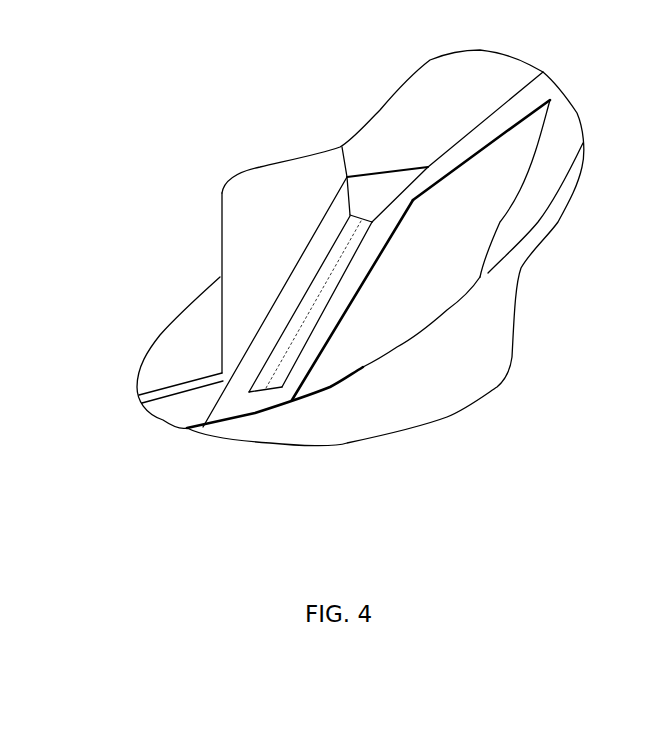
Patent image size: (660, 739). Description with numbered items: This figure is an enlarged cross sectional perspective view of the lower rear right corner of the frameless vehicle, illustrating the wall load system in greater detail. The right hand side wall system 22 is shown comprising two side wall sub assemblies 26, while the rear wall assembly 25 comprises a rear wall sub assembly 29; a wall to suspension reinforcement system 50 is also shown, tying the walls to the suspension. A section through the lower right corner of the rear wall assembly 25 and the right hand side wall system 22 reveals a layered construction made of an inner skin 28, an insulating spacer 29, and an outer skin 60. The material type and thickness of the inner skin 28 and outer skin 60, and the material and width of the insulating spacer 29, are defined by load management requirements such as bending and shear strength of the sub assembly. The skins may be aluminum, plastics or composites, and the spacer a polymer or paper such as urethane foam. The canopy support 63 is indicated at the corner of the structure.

The right hand side wall system 22 is at (551, 52).
The rear wall assembly 25 is at (226, 249).
The side wall sub assembly 26 is at (436, 140).
The inner skin 28 is at (307, 290).
The insulating spacer 29 is at (317, 255).
The wall to suspension reinforcement system 50 is at (340, 357).
The outer skin 60 is at (340, 194).
The canopy support 63 is at (174, 420).